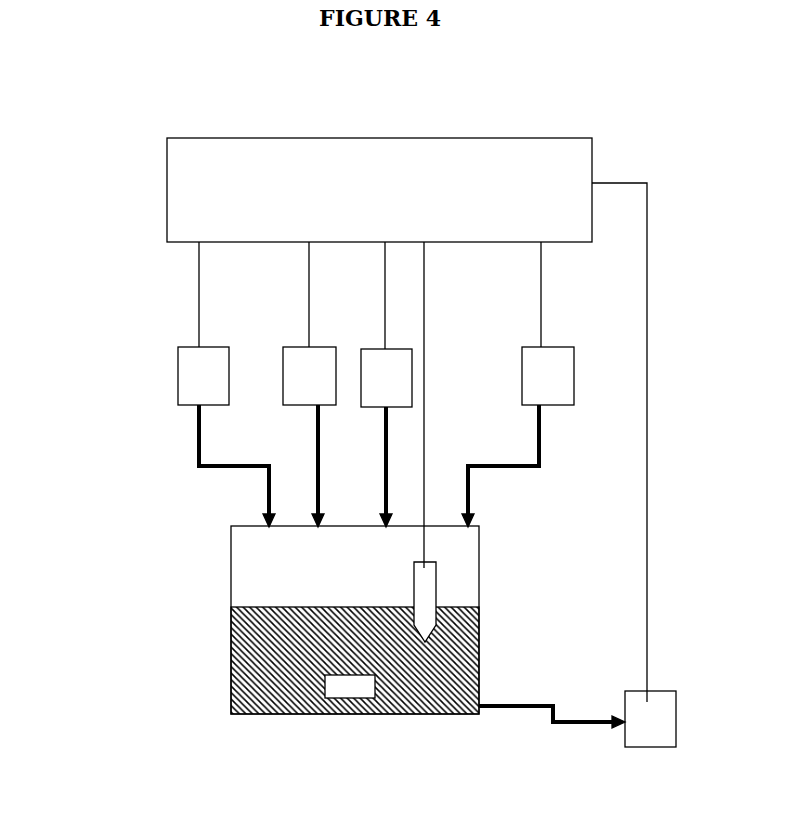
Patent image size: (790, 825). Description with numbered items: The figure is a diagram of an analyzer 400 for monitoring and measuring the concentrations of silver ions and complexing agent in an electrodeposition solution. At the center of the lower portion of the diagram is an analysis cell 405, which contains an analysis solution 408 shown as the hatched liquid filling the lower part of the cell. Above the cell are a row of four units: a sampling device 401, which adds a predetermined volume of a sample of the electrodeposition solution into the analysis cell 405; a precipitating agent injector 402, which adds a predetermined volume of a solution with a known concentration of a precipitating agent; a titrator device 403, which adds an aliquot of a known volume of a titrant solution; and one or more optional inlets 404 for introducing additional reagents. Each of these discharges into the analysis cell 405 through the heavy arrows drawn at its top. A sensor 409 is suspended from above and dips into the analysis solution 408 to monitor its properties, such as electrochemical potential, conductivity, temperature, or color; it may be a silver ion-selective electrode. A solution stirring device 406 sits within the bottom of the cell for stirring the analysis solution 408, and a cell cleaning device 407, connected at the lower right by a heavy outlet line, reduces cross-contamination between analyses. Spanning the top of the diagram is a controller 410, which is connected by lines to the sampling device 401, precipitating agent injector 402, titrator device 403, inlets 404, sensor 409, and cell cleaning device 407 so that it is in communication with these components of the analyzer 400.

The analyzer 400 is at (543, 70).
The sampling device 401 is at (226, 437).
The precipitating agent injector 402 is at (309, 437).
The titrator device 403 is at (386, 438).
The optional inlets 404 is at (518, 437).
The analysis cell 405 is at (221, 640).
The solution stirring device 406 is at (346, 710).
The cell cleaning device 407 is at (577, 719).
The analysis solution 408 is at (466, 664).
The sensor 409 is at (453, 575).
The controller 410 is at (407, 420).